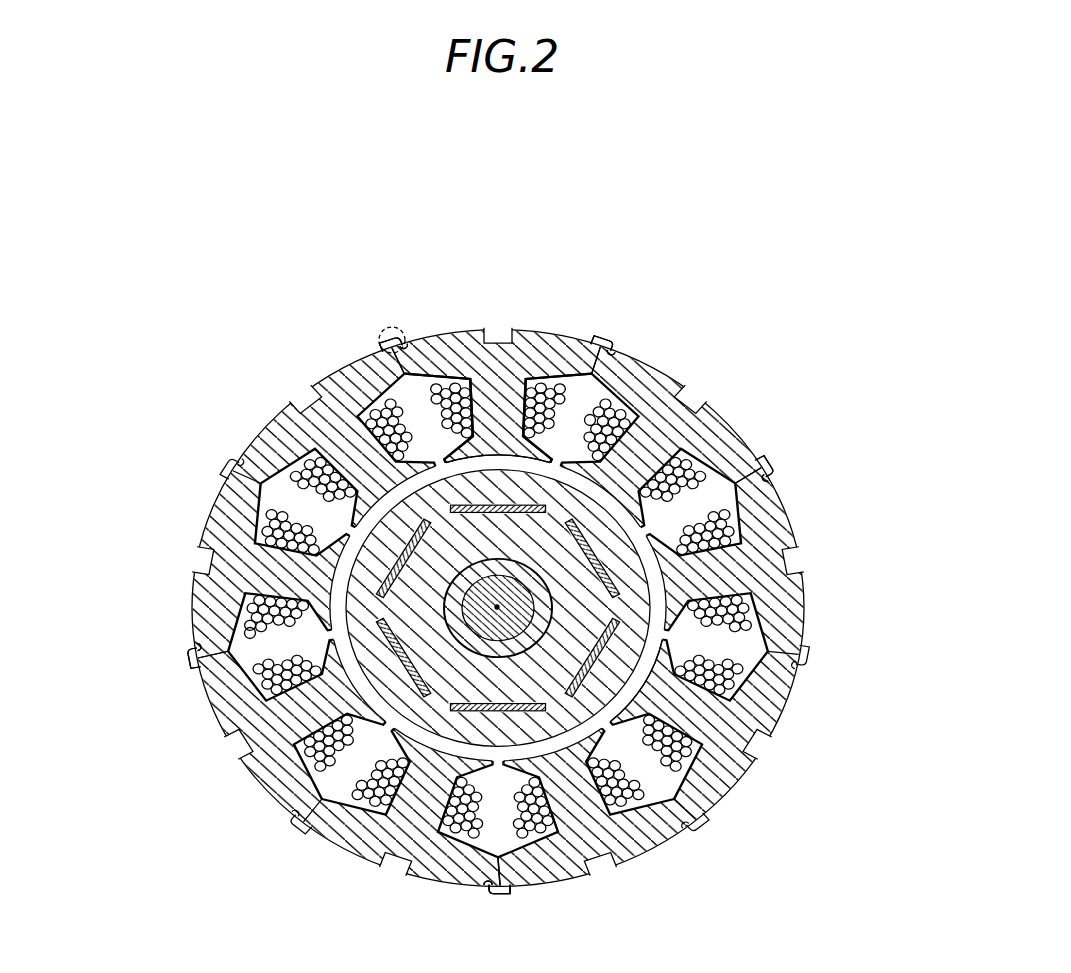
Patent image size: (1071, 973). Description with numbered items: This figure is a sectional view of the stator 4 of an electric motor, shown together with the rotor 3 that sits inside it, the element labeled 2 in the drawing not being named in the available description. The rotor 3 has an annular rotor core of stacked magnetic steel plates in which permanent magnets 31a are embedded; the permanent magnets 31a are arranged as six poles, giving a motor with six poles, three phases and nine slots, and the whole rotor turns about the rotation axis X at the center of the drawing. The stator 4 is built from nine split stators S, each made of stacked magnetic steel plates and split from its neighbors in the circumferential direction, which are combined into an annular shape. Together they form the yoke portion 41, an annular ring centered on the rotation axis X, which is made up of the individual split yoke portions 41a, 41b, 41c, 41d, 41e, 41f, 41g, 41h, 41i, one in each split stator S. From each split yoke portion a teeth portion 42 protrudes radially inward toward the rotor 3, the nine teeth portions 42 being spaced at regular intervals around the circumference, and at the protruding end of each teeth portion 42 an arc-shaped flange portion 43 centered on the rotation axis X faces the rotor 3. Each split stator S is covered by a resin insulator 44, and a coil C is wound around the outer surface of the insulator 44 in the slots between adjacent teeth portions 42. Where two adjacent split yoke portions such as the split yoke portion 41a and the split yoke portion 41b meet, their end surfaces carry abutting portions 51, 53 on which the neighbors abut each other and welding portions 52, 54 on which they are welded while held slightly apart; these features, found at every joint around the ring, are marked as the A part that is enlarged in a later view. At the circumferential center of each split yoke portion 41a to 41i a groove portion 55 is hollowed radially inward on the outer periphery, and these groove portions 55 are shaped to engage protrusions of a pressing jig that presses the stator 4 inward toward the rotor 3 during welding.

The rotor 2 is at (431, 639).
The rotor 3 is at (510, 658).
The stator 4 is at (499, 603).
The permanent magnet 31a is at (405, 668).
The yoke portion 41 is at (497, 409).
The split yoke portion 41a is at (351, 364).
The split yoke portion 41b is at (577, 330).
The split yoke portion 41c is at (731, 423).
The split yoke portion 41d is at (797, 600).
The split yoke portion 41e is at (720, 802).
The split yoke portion 41f is at (652, 848).
The split yoke portion 41g is at (465, 888).
The split yoke portion 41h is at (280, 806).
The split yoke portion 41i is at (222, 488).
The teeth portion 42 is at (722, 570).
The flange portion 43 is at (657, 690).
The insulator 44 is at (395, 385).
The abutting portion 51 is at (398, 340).
The welding portion 52 is at (778, 462).
The abutting portion 53 is at (599, 357).
The welding portion 54 is at (497, 875).
The groove portion 55 is at (508, 332).
The A part A is at (402, 329).
The coil C is at (588, 423).
The split stator S is at (398, 356).
The rotation axis X is at (498, 608).